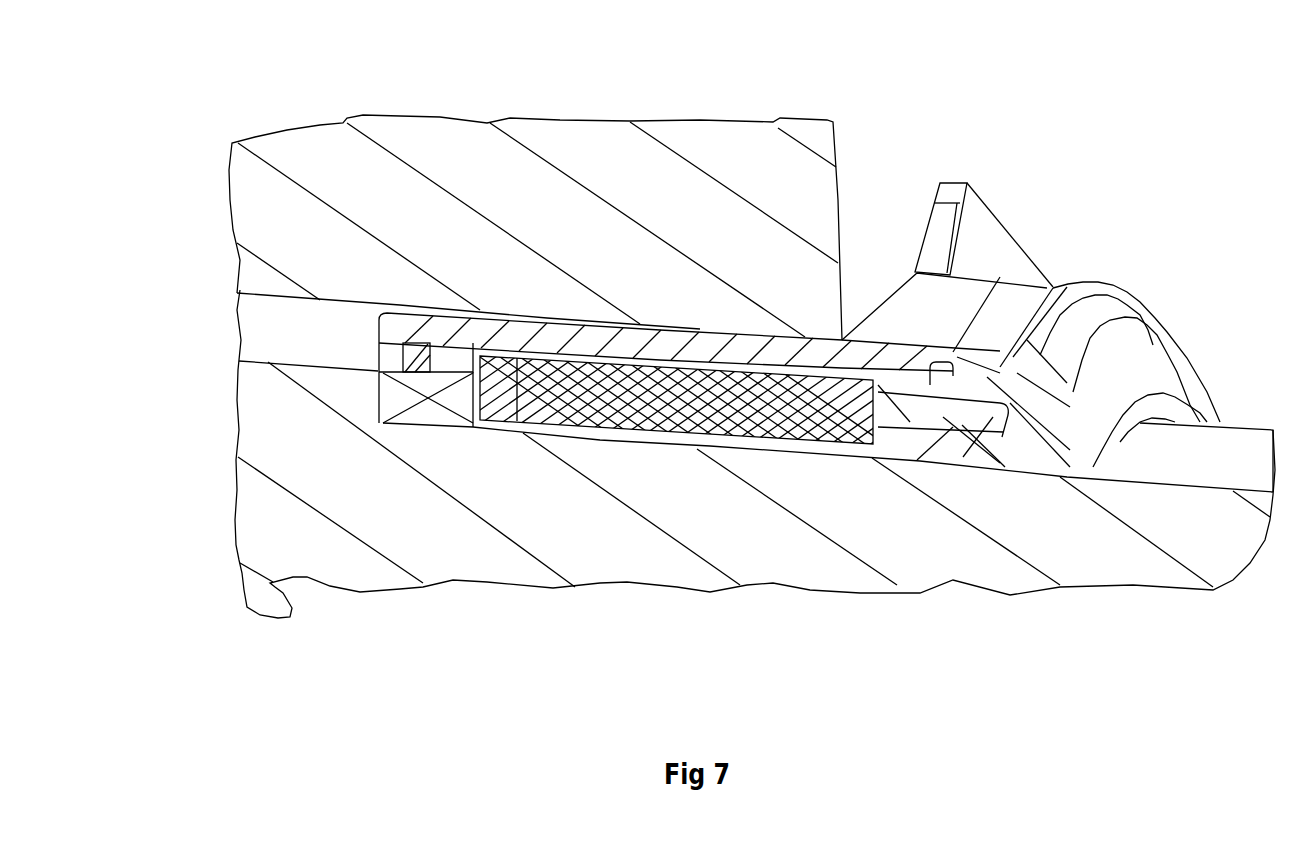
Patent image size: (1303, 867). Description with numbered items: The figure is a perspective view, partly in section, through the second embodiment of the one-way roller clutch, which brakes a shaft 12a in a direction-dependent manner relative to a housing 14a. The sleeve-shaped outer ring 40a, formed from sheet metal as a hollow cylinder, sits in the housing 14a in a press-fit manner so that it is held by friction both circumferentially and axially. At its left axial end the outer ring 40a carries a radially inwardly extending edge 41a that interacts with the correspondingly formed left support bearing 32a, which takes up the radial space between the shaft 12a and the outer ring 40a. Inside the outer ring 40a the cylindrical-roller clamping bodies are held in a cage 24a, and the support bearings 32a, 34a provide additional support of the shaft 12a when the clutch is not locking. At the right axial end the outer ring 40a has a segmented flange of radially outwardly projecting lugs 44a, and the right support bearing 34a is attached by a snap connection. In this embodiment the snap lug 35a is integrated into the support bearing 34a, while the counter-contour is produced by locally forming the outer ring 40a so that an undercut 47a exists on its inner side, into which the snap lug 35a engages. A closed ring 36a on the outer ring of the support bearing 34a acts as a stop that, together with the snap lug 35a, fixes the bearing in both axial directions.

The housing 14a is at (288, 215).
The shaft 12a is at (338, 500).
The outer ring 40a is at (698, 343).
The radially inwardly extending edge 41a is at (373, 347).
The left support bearing 32a is at (431, 400).
The cage 24a is at (677, 400).
The undercut 47a is at (950, 345).
The lugs 44a is at (973, 215).
The snap lug 35a is at (955, 352).
The ring 36a is at (1058, 305).
The right support bearing 34a is at (1090, 395).